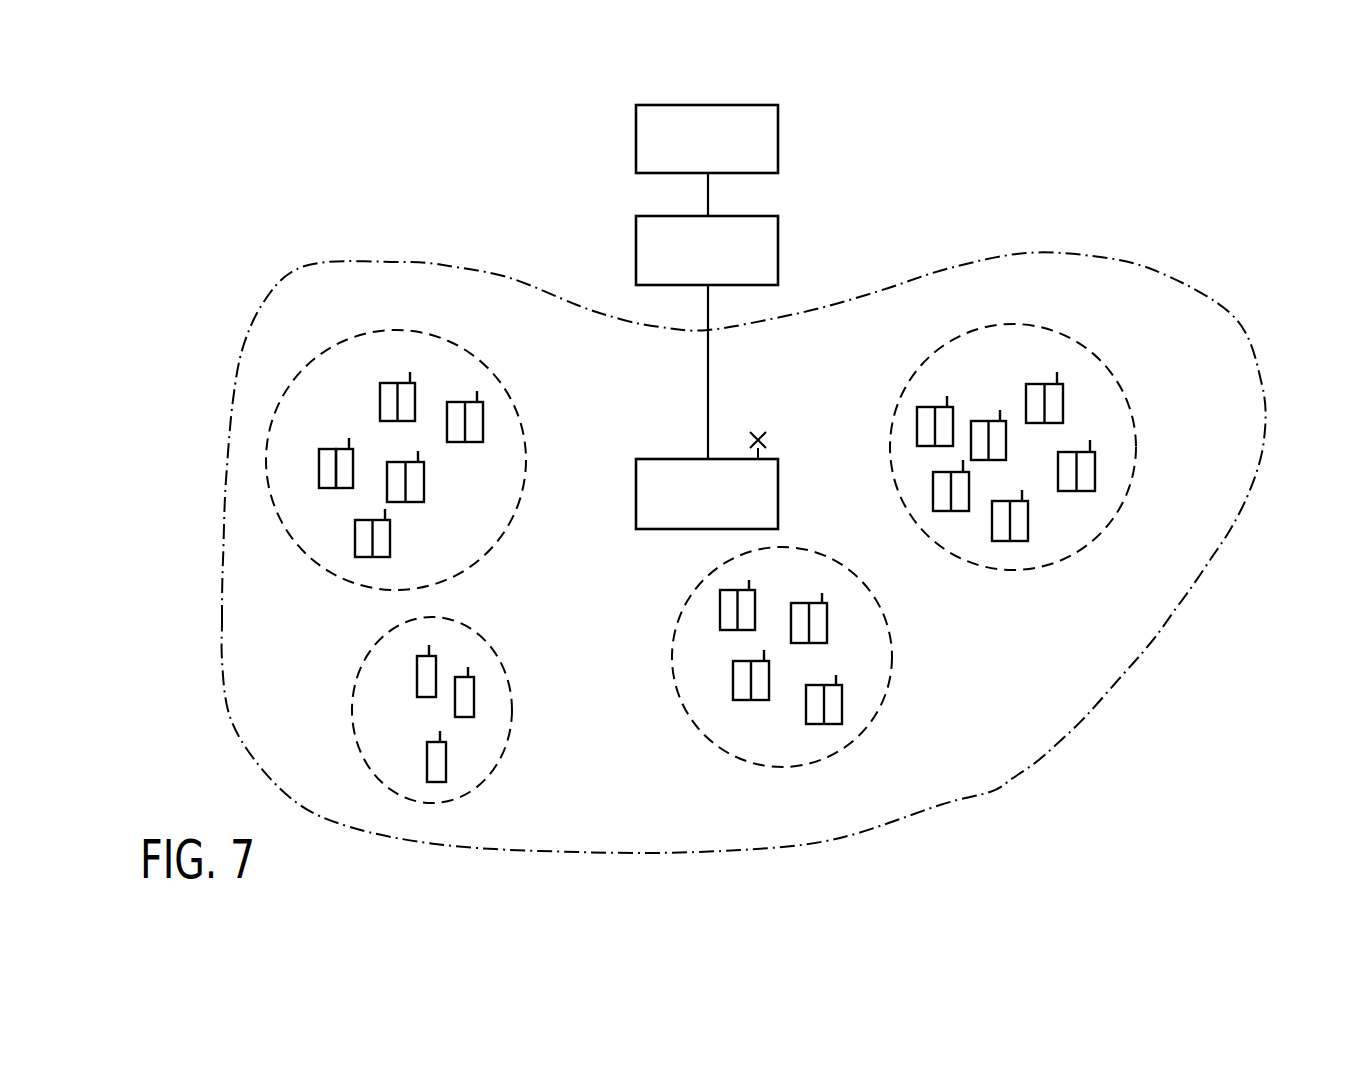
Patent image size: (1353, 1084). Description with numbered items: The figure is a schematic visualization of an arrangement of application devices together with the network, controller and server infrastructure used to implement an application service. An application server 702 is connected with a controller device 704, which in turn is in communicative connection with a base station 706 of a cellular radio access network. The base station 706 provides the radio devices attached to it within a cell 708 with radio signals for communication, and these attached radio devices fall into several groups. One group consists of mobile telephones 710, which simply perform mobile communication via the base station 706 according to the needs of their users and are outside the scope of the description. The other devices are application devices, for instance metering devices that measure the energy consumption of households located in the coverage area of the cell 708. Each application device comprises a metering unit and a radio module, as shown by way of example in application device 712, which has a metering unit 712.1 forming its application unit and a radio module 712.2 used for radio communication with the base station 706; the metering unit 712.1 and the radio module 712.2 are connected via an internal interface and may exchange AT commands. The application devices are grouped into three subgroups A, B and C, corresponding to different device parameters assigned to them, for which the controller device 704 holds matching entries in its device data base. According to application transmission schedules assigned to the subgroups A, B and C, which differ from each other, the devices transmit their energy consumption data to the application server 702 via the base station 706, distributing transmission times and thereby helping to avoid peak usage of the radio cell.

The application server 702 is at (779, 139).
The controller device 704 is at (779, 256).
The base station 706 is at (674, 458).
The cell 708 is at (1158, 273).
The mobile telephones 710 is at (485, 640).
The application device 712 is at (241, 353).
The metering unit 712.1 is at (321, 475).
The radio module 712.2 is at (340, 477).
The subgroup A is at (488, 366).
The subgroup B is at (822, 556).
The subgroup C is at (1123, 388).